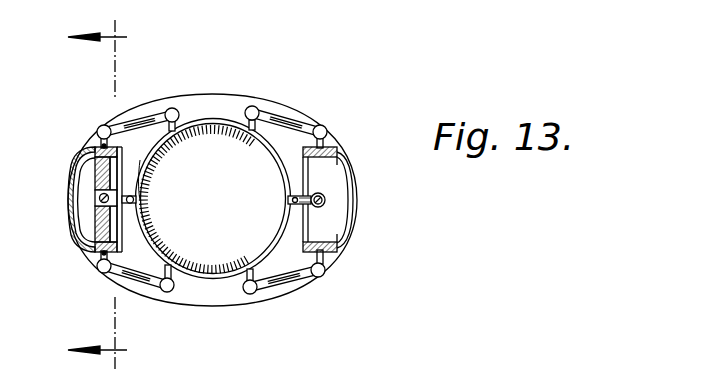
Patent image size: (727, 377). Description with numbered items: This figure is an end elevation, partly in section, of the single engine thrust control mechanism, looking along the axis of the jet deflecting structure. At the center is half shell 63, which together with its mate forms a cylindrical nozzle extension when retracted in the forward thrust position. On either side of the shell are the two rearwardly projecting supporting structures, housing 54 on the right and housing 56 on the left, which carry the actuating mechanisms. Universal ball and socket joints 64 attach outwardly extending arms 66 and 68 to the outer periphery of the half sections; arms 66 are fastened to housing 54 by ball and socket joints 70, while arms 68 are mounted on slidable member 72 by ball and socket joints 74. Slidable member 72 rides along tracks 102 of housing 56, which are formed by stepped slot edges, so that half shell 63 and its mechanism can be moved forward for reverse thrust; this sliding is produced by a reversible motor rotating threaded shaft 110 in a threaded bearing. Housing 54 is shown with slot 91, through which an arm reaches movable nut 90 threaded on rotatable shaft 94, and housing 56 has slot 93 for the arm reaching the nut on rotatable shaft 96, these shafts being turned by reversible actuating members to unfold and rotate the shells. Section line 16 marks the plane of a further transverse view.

The section line 16- 16 is at (109, 193).
The housing 54 is at (355, 228).
The housing 56 is at (70, 226).
The half shell 63 is at (218, 118).
The universal ball and socket joint 64 is at (173, 110).
The arm 66 is at (297, 126).
The arm 68 is at (137, 126).
The ball and socket joint 70 is at (326, 136).
The slidable member 72 is at (97, 170).
The ball and socket joint 74 is at (106, 126).
The movable nut 90 is at (330, 186).
The slot 91 is at (296, 196).
The slot 93 is at (142, 180).
The rotatable shaft 94 is at (326, 200).
The rotatable shaft 96 is at (76, 203).
The track 102 is at (123, 260).
The threaded shaft 110 is at (113, 222).